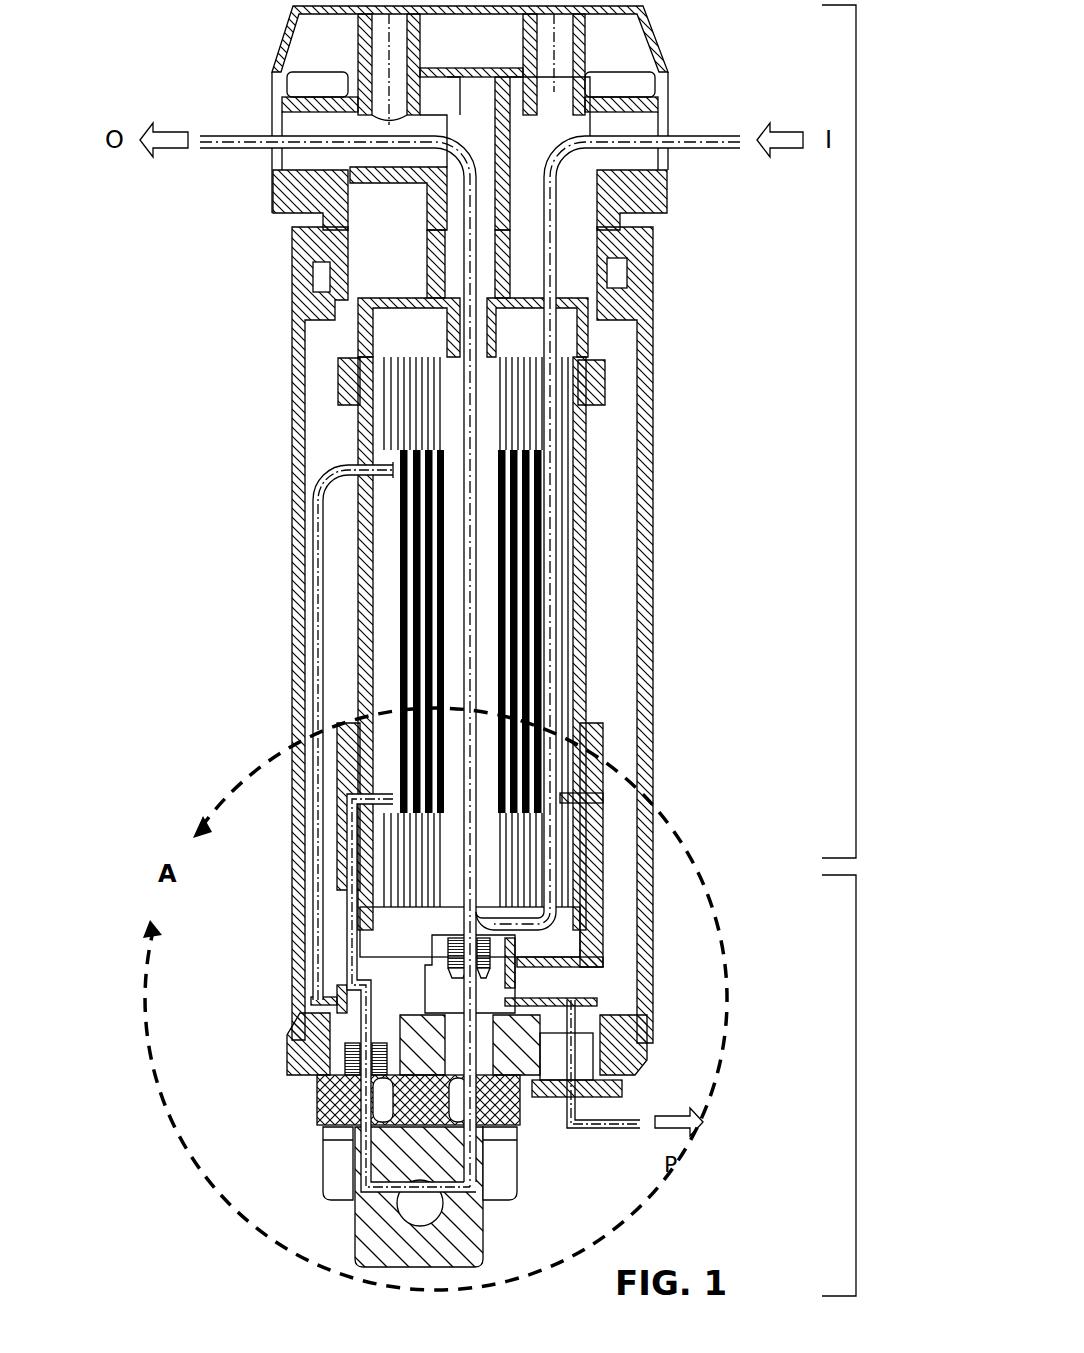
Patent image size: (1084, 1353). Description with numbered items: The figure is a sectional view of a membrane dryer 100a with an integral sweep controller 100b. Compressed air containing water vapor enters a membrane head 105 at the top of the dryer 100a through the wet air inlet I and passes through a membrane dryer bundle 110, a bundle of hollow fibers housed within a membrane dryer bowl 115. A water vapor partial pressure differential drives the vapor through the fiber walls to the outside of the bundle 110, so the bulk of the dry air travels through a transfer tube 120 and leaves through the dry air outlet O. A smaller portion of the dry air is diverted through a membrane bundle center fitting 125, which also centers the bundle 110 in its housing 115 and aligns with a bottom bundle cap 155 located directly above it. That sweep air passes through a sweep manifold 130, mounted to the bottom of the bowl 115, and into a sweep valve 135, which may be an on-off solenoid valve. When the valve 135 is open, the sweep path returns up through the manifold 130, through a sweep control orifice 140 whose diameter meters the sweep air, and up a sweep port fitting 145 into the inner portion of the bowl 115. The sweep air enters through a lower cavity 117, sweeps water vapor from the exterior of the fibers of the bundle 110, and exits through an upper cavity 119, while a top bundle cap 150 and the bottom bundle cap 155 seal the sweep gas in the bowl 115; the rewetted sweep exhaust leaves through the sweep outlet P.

The membrane dryer 100a is at (857, 514).
The integral sweep controller 100b is at (857, 1070).
The membrane head 105 is at (668, 73).
The membrane dryer bundle 110 is at (545, 498).
The membrane dryer bowl 115 is at (643, 548).
The lower cavity 117 is at (352, 795).
The upper cavity 119 is at (367, 462).
The transfer tube 120 is at (468, 660).
The membrane bundle center fitting 125 is at (495, 985).
The sweep manifold 130 is at (332, 1090).
The valve 135 is at (333, 1178).
The sweep control orifice 140 is at (332, 1068).
The sweep port fitting 145 is at (320, 1003).
The top bundle cap 150 is at (562, 337).
The bottom bundle cap 155 is at (497, 975).